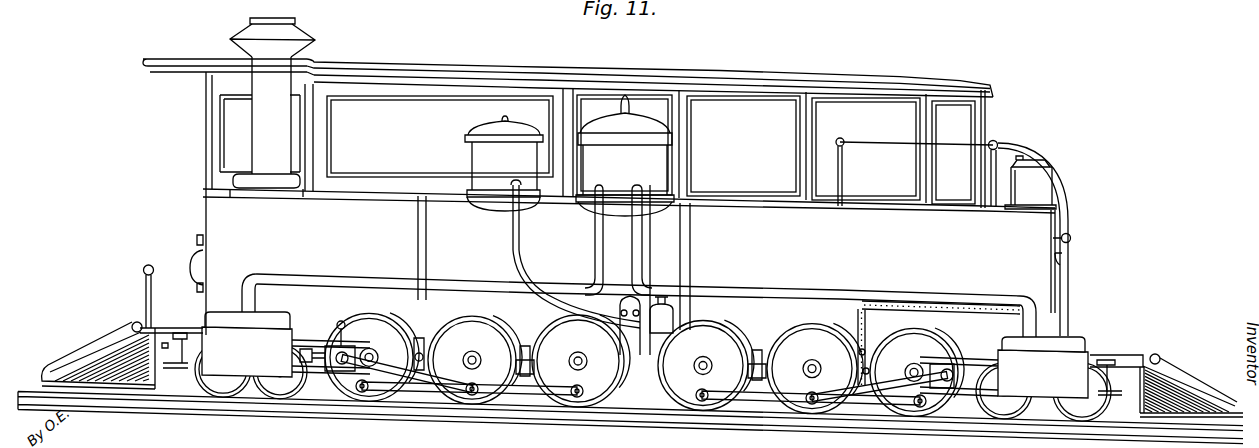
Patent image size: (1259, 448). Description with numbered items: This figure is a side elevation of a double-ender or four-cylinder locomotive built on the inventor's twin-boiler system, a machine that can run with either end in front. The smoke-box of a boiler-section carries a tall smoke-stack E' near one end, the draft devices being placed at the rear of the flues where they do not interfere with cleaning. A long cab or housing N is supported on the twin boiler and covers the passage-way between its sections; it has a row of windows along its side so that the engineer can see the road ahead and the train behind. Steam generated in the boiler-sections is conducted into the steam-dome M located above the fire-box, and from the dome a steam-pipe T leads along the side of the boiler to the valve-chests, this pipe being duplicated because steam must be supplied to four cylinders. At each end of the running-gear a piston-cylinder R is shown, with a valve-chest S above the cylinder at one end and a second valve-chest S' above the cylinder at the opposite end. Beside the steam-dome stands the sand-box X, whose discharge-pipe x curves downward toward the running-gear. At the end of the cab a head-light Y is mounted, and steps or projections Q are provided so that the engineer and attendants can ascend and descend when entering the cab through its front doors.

The stack E' is at (272, 107).
The cab or housing N is at (435, 43).
The sand-box X is at (485, 160).
The discharge-pipe x is at (575, 254).
The steam-dome M is at (604, 160).
The steam-pipe T is at (639, 261).
The head-light Y is at (1030, 182).
The steps or projections Q is at (1068, 252).
The valve-chest S is at (247, 314).
The valve-chest S' is at (1050, 341).
The piston-cylinder R is at (645, 362).